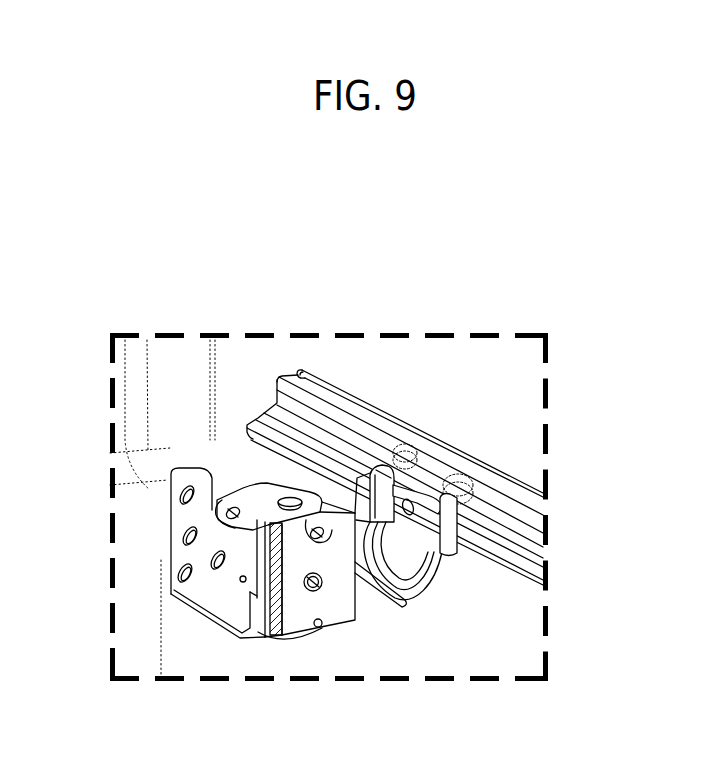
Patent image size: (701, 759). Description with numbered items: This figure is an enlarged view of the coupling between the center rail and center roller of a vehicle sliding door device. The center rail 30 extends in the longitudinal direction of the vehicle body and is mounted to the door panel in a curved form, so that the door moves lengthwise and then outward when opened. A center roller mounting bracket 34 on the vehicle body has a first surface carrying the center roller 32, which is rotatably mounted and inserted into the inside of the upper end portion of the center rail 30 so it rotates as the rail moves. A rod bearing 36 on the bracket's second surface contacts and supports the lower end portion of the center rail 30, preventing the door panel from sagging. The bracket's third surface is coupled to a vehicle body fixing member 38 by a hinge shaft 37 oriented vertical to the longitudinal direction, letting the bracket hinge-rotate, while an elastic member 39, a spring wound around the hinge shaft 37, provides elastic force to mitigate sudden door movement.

The center rail 30 is at (378, 432).
The center roller 32 is at (515, 473).
The center roller mounting bracket 34 is at (408, 606).
The rod bearing 36 is at (452, 553).
The hinge shaft 37 is at (290, 497).
The vehicle body fixing member 38 is at (183, 549).
The elastic member 39 is at (247, 590).